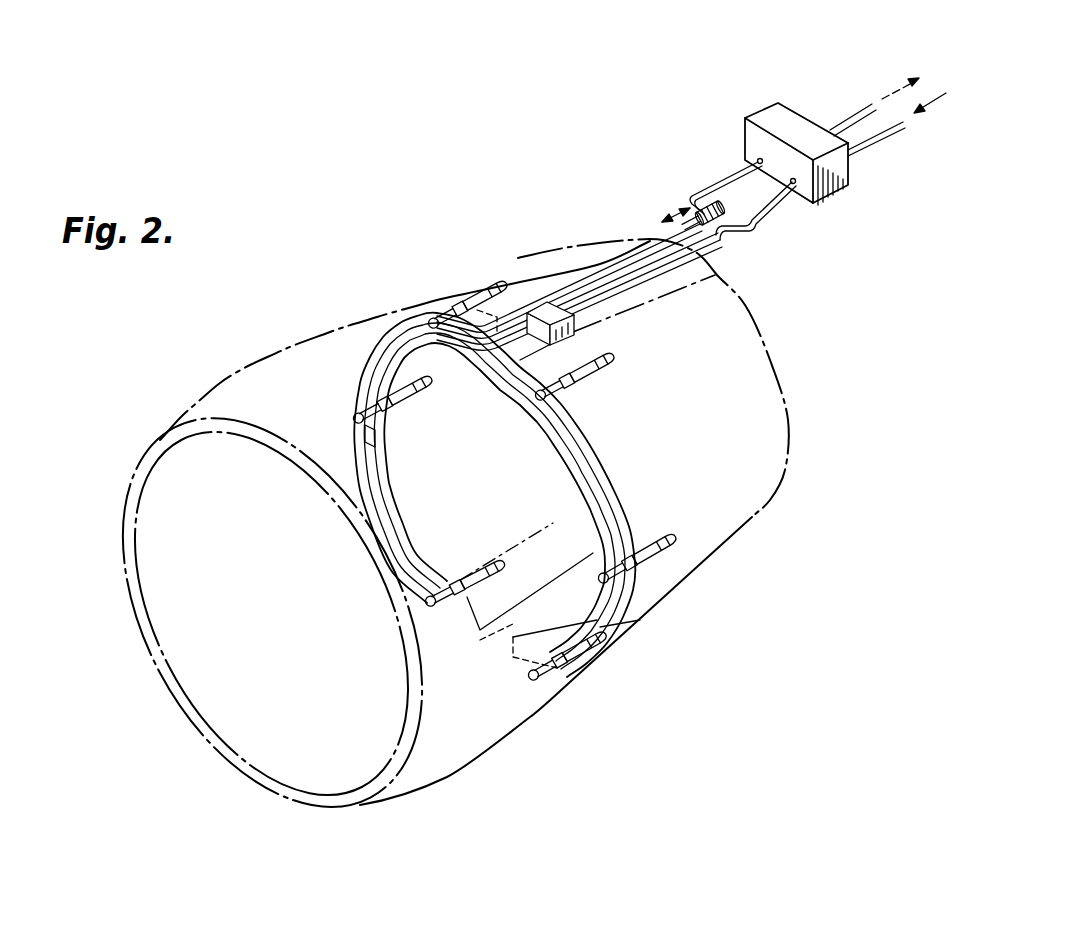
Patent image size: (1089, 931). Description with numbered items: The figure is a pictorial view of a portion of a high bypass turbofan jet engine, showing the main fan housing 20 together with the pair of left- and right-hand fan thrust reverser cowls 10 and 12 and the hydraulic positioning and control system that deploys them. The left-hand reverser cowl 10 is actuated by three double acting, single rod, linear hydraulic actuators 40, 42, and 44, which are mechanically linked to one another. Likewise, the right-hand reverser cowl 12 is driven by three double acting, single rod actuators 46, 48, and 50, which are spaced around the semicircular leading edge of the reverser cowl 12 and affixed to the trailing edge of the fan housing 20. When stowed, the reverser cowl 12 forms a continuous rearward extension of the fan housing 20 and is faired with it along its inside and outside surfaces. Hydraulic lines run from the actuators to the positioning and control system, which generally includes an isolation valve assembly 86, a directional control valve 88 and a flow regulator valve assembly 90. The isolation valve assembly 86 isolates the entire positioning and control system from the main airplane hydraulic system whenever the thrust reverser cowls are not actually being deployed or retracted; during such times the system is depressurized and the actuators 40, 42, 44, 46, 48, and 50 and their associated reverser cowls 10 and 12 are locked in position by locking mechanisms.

The left-hand fan thrust reverser cowl 10 is at (758, 517).
The right-hand fan thrust reverser cowl 12 is at (596, 263).
The main fan housing 20 is at (216, 383).
The linear hydraulic actuator 40 is at (593, 366).
The linear hydraulic actuator 42 is at (657, 560).
The linear hydraulic actuator 44 is at (572, 655).
The hydraulic actuator 46 is at (473, 292).
The hydraulic actuator 48 is at (385, 395).
The hydraulic actuator 50 is at (445, 604).
The isolation valve assembly 86 is at (838, 194).
The directional control valve 88 is at (684, 204).
The flow regulator valve assembly 90 is at (546, 304).